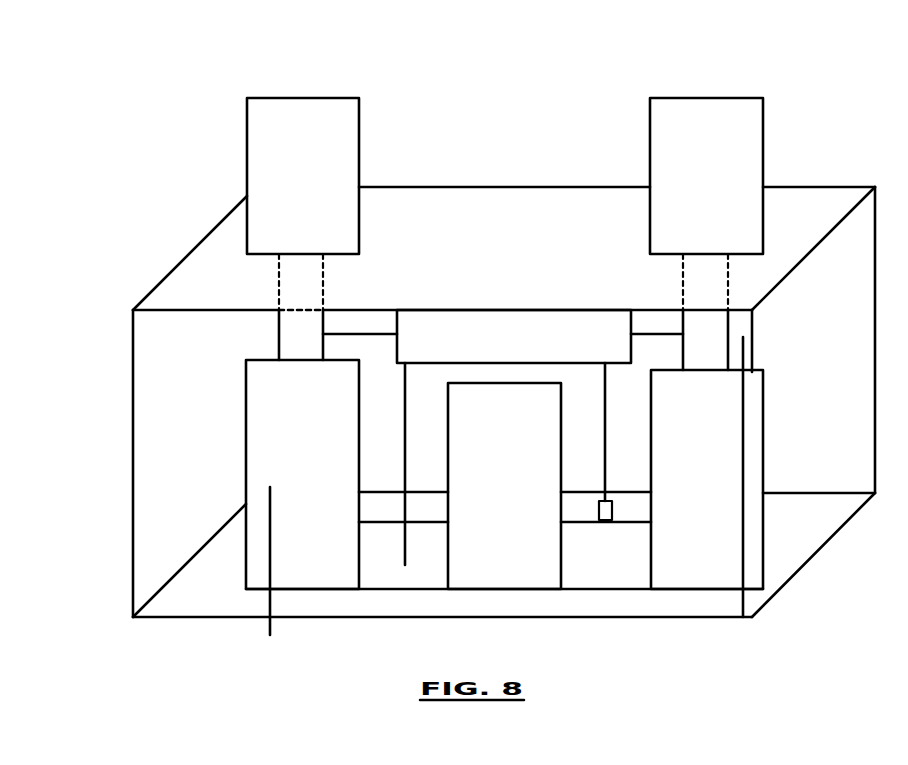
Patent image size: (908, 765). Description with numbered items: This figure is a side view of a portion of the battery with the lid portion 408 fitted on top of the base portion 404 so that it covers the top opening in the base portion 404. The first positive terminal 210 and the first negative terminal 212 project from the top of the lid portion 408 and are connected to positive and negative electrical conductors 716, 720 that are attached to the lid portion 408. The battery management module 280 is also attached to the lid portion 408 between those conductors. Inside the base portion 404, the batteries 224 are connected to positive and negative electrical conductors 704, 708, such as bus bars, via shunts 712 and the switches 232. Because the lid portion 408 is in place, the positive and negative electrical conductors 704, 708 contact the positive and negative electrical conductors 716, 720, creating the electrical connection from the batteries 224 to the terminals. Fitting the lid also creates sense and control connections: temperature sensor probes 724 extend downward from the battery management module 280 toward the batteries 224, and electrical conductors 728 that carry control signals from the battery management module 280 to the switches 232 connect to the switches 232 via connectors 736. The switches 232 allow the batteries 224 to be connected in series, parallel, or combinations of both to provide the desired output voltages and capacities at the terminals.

The first positive terminal 210 is at (302, 98).
The first negative terminal 212 is at (707, 98).
The batteries 224 is at (504, 383).
The switches 232 is at (603, 590).
The battery management module 280 is at (515, 310).
The base portion 404 is at (133, 553).
The lid portion 408 is at (160, 283).
The positive electrical conductor 704 is at (247, 472).
The negative electrical conductor 708 is at (757, 372).
The shunts 712 is at (383, 521).
The positive electrical conductor 716 is at (279, 333).
The negative electrical conductor 720 is at (728, 330).
The temperature sensor probes 724 is at (405, 398).
The electrical conductors 728 is at (605, 395).
The connectors 736 is at (612, 512).